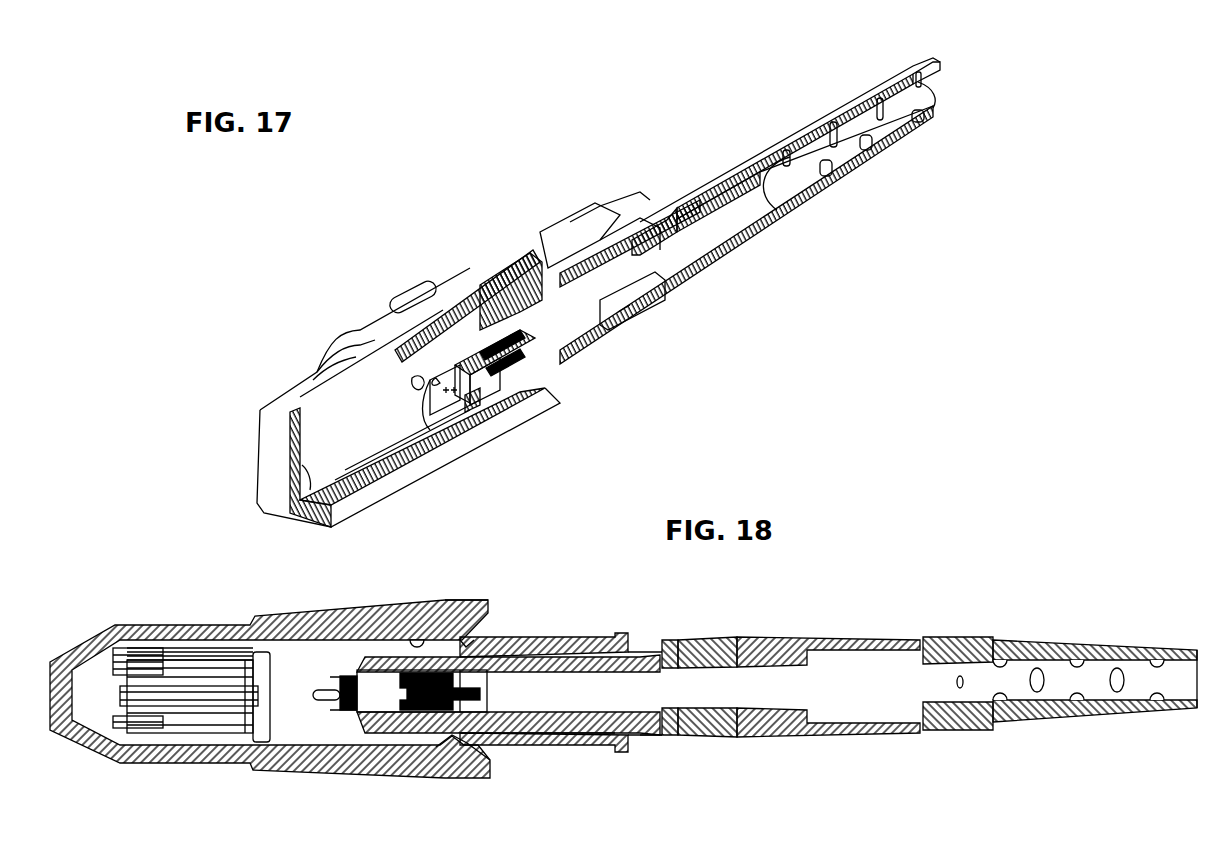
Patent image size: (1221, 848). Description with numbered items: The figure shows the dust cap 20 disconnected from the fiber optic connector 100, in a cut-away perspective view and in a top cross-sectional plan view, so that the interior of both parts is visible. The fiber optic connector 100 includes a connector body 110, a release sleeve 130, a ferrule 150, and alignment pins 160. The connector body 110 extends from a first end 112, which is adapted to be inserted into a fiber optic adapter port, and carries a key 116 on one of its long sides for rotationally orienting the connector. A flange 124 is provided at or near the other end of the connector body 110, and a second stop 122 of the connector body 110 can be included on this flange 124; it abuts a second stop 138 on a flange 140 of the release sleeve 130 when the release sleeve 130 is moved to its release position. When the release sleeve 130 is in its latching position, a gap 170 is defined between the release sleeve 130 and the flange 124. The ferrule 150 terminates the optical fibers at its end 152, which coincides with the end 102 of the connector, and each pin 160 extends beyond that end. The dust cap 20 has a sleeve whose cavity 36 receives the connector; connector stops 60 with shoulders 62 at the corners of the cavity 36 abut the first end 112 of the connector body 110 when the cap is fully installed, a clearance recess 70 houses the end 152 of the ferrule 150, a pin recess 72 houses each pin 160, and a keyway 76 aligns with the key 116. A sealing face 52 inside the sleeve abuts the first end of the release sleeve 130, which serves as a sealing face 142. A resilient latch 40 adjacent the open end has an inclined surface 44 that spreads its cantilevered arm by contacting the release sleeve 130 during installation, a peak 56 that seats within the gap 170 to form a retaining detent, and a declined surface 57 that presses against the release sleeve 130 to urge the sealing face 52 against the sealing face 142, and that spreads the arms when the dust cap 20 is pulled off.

In FIG. 17, the dust cap 20 is at (334, 326).
In FIG. 18, the dust cap 20 is at (138, 618).
In FIG. 18, the cavity 36 is at (230, 723).
In FIG. 17, the resilient latch 40 is at (522, 253).
In FIG. 18, the resilient latch 40 is at (452, 742).
In FIG. 18, the inclined surface 44 is at (477, 745).
In FIG. 18, the sealing face 52 is at (277, 730).
In FIG. 18, the peak 56 is at (445, 737).
In FIG. 18, the declined surface 57 is at (413, 640).
In FIG. 17, the connector stop 60 is at (302, 470).
In FIG. 18, the connector stop 60 is at (140, 727).
In FIG. 18, the shoulder 62 is at (170, 670).
In FIG. 18, the clearance recess 70 is at (160, 703).
In FIG. 18, the pin recess 72 is at (140, 695).
In FIG. 17, the keyway 76 is at (360, 487).
In FIG. 17, the fiber optic connector 100 is at (525, 358).
In FIG. 18, the fiber optic connector 100 is at (580, 636).
In FIG. 17, the end of the connector 102 is at (433, 390).
In FIG. 18, the end of the connector 102 is at (343, 700).
In FIG. 17, the connector body 110 is at (487, 340).
In FIG. 18, the connector body 110 is at (643, 720).
In FIG. 17, the first end of the connector body 112 is at (478, 332).
In FIG. 18, the first end of the connector body 112 is at (357, 670).
In FIG. 17, the key 116 is at (470, 410).
In FIG. 17, the second stop of the connector body 122 is at (620, 313).
In FIG. 18, the second stop of the connector body 122 is at (660, 733).
In FIG. 17, the flange 124 is at (618, 227).
In FIG. 18, the flange 124 is at (667, 637).
In FIG. 17, the release sleeve 130 is at (547, 237).
In FIG. 18, the release sleeve 130 is at (517, 740).
In FIG. 17, the second stop of the release sleeve 138 is at (620, 323).
In FIG. 17, the flange of the release sleeve 140 is at (563, 220).
In FIG. 18, the sealing face of the release sleeve 142 is at (461, 640).
In FIG. 17, the ferrule 150 is at (477, 397).
In FIG. 18, the ferrule 150 is at (350, 707).
In FIG. 17, the end of the ferrule 152 is at (447, 397).
In FIG. 18, the end of the ferrule 152 is at (338, 677).
In FIG. 17, the alignment pin 160 is at (417, 383).
In FIG. 18, the gap 170 is at (647, 640).